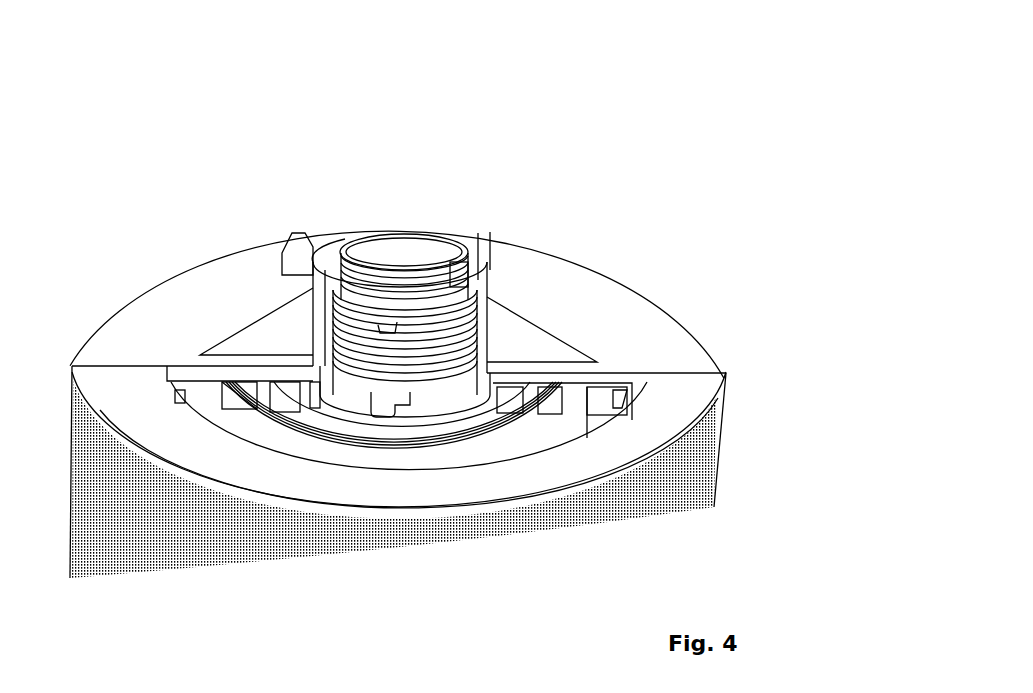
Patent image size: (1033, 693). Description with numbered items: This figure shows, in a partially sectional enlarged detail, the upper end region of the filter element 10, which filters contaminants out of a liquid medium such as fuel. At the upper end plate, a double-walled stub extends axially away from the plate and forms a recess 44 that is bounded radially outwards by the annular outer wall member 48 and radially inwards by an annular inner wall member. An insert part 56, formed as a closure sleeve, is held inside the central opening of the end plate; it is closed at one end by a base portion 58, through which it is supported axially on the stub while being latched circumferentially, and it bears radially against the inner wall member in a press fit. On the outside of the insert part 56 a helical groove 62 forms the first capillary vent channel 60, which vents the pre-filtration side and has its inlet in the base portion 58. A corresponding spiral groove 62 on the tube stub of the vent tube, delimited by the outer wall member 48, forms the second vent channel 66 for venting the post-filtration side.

The filter element 10 is at (595, 165).
The recess 44 is at (508, 398).
The outer wall member 48 is at (484, 332).
The insert part 56 is at (413, 248).
The base portion 58 is at (383, 260).
The first capillary vent channel 60 is at (455, 282).
The groove 62 is at (345, 338).
The second vent channel 66 is at (475, 357).